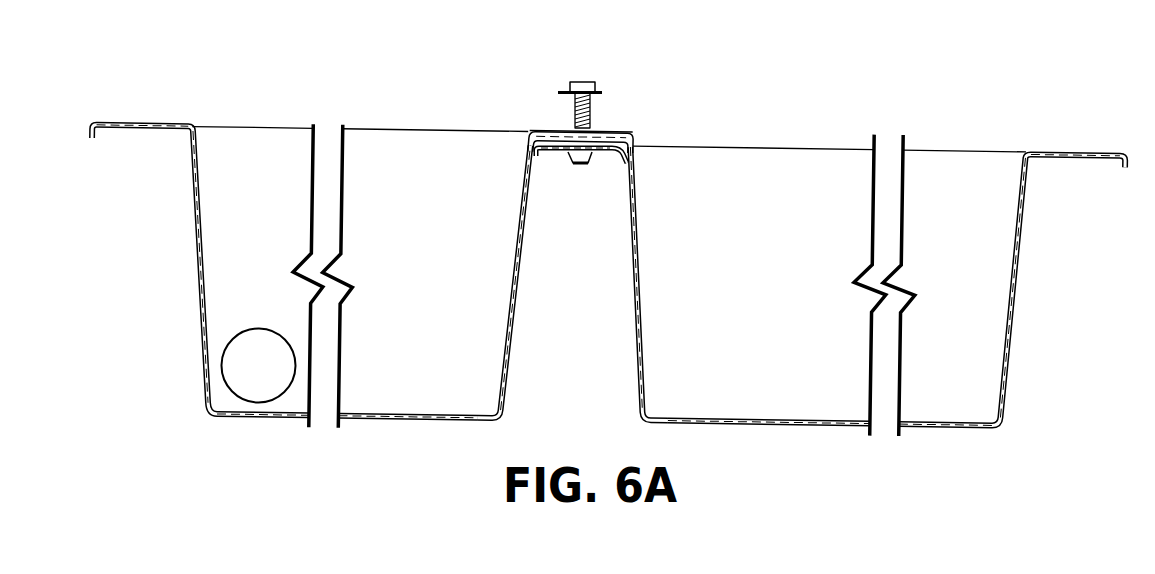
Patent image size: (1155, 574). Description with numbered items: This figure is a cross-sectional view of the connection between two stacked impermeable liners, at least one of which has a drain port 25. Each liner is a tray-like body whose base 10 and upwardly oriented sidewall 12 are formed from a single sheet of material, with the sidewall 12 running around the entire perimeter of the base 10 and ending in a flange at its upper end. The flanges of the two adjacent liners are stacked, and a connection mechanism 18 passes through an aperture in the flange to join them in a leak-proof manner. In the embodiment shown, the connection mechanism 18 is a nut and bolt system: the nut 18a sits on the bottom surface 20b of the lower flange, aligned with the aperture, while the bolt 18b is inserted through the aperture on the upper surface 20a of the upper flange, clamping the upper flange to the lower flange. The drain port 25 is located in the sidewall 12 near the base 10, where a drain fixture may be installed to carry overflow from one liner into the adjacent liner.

The base 10 is at (413, 415).
The sidewall 12 is at (513, 268).
The connection mechanism 18 is at (587, 81).
The nut 18a is at (579, 175).
The bolt 18b is at (560, 91).
The upper surface of the upper flange 20a is at (543, 134).
The bottom surface of the lower flange 20b is at (614, 150).
The drain port 25 is at (245, 400).